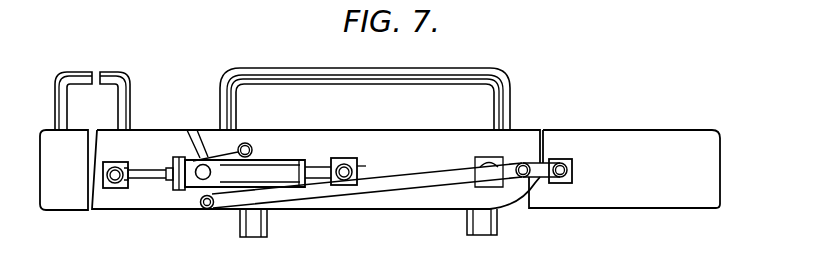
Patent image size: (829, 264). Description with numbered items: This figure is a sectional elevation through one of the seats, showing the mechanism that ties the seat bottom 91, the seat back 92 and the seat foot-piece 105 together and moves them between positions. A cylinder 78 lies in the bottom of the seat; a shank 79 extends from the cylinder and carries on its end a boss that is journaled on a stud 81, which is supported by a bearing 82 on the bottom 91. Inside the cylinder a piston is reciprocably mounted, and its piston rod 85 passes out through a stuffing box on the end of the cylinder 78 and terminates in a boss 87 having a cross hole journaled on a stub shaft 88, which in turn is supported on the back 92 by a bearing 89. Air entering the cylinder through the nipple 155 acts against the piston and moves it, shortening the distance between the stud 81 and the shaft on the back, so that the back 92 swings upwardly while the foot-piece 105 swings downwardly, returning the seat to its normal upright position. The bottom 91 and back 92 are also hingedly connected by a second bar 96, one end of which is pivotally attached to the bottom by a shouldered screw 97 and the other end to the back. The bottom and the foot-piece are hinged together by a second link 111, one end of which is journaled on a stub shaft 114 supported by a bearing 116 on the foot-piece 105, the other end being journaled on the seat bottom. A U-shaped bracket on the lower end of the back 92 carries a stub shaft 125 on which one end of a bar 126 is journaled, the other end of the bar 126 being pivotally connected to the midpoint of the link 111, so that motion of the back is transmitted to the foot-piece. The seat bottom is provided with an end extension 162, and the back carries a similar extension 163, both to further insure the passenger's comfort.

The extension 163 is at (128, 84).
The end extension 162 is at (390, 75).
The bottom of the seat 91 is at (393, 134).
The back of the seat 92 is at (147, 138).
The second bar 96 is at (230, 157).
The shouldered screw 97 is at (250, 145).
The cylinder 78 is at (258, 165).
The shank 79 is at (312, 168).
The stud 81 is at (346, 164).
The bearing 82 is at (373, 166).
The bar 126 is at (403, 178).
The seat foot-piece 105 is at (650, 133).
The second link 111 is at (544, 165).
The bearing 116 is at (573, 162).
The stub shaft 114 is at (572, 171).
The bearing 89 is at (118, 164).
The stub shaft 88 is at (112, 190).
The piston rod 85 is at (145, 170).
The boss 87 is at (127, 166).
The nipple 155 is at (203, 180).
The stub shaft 125 is at (209, 209).